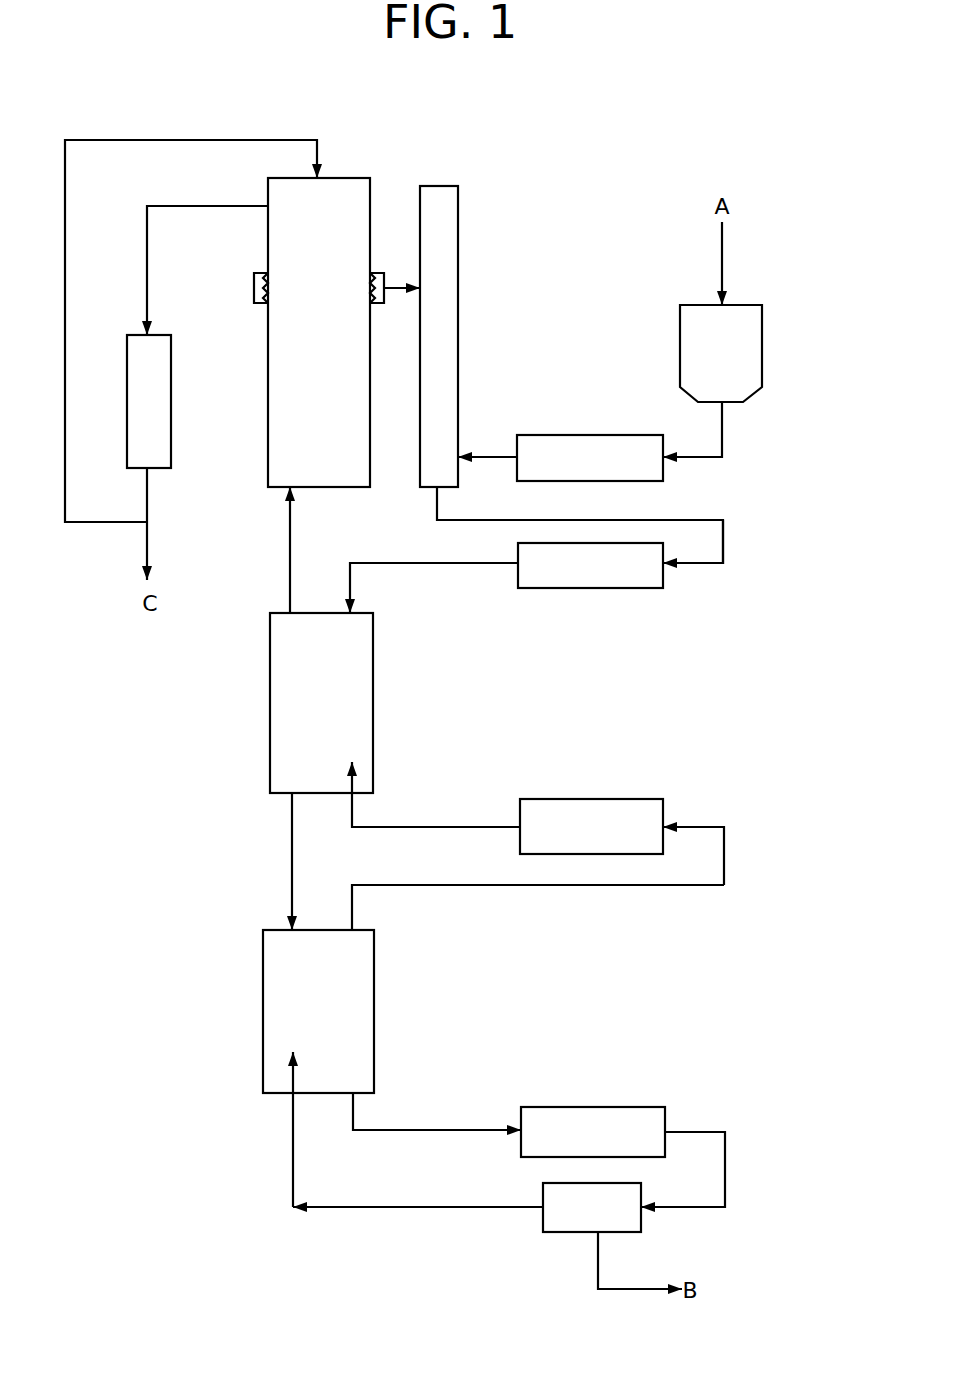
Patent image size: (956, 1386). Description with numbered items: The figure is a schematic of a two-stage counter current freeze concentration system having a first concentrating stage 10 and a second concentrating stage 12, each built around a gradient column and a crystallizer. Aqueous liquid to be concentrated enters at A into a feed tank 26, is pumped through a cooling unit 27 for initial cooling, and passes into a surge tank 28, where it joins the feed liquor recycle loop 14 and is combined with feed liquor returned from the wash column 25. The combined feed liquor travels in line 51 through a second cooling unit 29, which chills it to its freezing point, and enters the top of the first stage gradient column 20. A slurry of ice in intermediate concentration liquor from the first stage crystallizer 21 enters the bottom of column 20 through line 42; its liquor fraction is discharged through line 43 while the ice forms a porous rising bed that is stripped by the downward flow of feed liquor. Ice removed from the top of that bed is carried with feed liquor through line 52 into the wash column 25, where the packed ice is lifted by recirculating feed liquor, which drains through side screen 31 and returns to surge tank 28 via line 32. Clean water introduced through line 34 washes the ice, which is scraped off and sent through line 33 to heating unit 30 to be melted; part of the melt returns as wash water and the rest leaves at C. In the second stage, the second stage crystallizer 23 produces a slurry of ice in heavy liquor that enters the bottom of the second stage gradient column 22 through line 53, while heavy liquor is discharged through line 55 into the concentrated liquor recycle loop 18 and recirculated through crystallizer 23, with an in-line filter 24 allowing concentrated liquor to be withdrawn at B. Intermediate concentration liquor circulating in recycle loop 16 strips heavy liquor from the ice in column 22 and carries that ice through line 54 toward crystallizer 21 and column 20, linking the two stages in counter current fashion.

The first concentrating stage 10 is at (262, 695).
The second concentrating stage 12 is at (245, 1050).
The feed liquor recycle loop 14 is at (745, 545).
The intermediate concentration liquor recycle loop 16 is at (738, 857).
The concentrated liquor recycle loop 18 is at (738, 1167).
The first stage gradient column 20 is at (373, 648).
The first stage crystallizer 21 is at (577, 836).
The second stage gradient column 22 is at (374, 983).
The second stage crystallizer 23 is at (579, 1144).
The in-line filter 24 is at (579, 1220).
The wash column 25 is at (268, 418).
The feed tank 26 is at (708, 364).
The cooling unit 27 is at (577, 471).
The surge tank 28 is at (458, 357).
The cooling unit 29 is at (577, 578).
The heating unit 30 is at (161, 416).
The side screen 31 is at (253, 290).
The line 32 is at (402, 291).
The line 33 is at (147, 298).
The line 34 is at (215, 140).
The line 42 is at (450, 827).
The line 43 is at (292, 875).
The line 51 is at (522, 519).
The line 52 is at (290, 548).
The line 53 is at (293, 1148).
The line 54 is at (460, 885).
The line 55 is at (445, 1130).